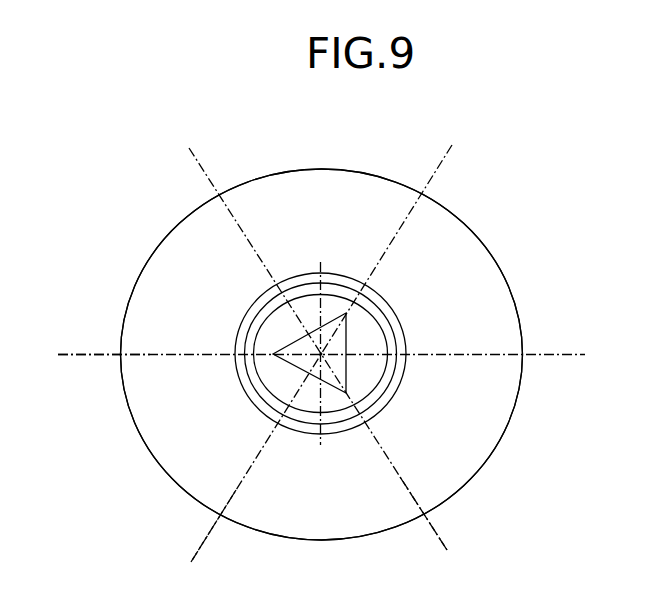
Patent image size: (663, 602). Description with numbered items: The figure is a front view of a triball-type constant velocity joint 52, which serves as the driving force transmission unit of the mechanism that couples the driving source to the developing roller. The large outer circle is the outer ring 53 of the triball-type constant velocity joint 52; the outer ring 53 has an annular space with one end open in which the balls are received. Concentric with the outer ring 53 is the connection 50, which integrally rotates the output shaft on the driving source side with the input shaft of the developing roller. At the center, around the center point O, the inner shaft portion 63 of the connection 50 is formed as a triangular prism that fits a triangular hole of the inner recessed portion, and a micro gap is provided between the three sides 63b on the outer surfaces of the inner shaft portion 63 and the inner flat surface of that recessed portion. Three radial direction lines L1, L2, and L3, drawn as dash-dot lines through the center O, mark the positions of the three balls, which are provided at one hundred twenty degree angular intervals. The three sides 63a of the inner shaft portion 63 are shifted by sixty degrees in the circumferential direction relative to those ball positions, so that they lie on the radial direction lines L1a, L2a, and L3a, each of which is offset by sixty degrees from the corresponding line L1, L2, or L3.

The connection 50 is at (245, 318).
The triball-type constant velocity joint 52 is at (524, 246).
The outer ring 53 is at (168, 228).
The inner shaft portion 63 is at (317, 382).
The sides of the inner shaft portion 63a is at (343, 337).
The sides on the outer surfaces of the inner shaft portion 63b is at (321, 274).
The center O is at (348, 360).
The radial direction line L1 is at (207, 163).
The radial direction line L1a is at (448, 202).
The radial direction line L2 is at (558, 354).
The radial direction line L2a is at (445, 502).
The radial direction line L3 is at (204, 540).
The radial direction line L3a is at (143, 356).